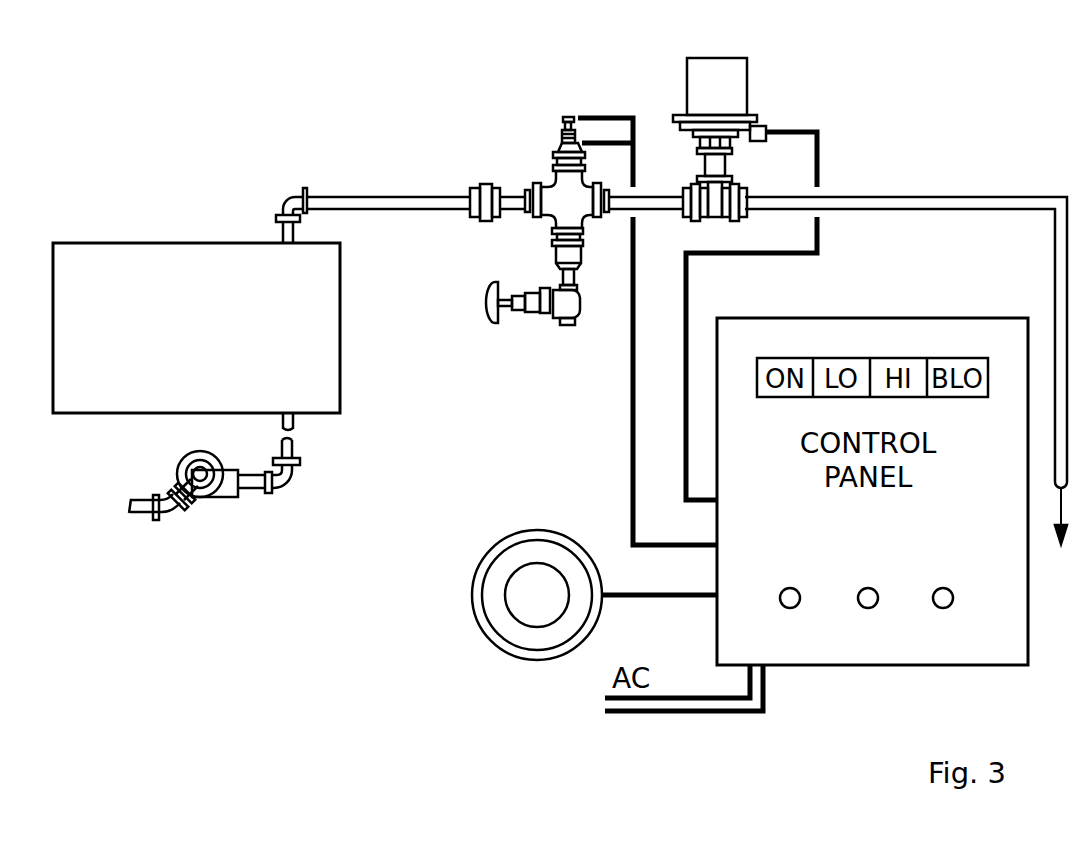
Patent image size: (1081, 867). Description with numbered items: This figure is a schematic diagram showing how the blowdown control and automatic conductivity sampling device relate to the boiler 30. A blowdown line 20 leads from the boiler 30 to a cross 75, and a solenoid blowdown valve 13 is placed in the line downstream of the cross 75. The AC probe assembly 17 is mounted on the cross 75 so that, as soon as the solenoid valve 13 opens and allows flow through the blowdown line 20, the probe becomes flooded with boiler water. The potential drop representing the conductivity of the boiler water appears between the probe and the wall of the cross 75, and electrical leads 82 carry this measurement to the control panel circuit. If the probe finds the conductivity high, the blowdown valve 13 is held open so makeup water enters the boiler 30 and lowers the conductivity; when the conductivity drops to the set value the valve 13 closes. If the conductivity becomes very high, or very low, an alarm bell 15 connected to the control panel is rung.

The solenoid blowdown valve 13 is at (727, 165).
The alarm bell 15 is at (503, 547).
The AC probe assembly 17 is at (565, 138).
The blowdown line 20 is at (330, 197).
The boiler 30 is at (313, 309).
The cross 75 is at (553, 187).
The electrical leads 82 is at (600, 140).